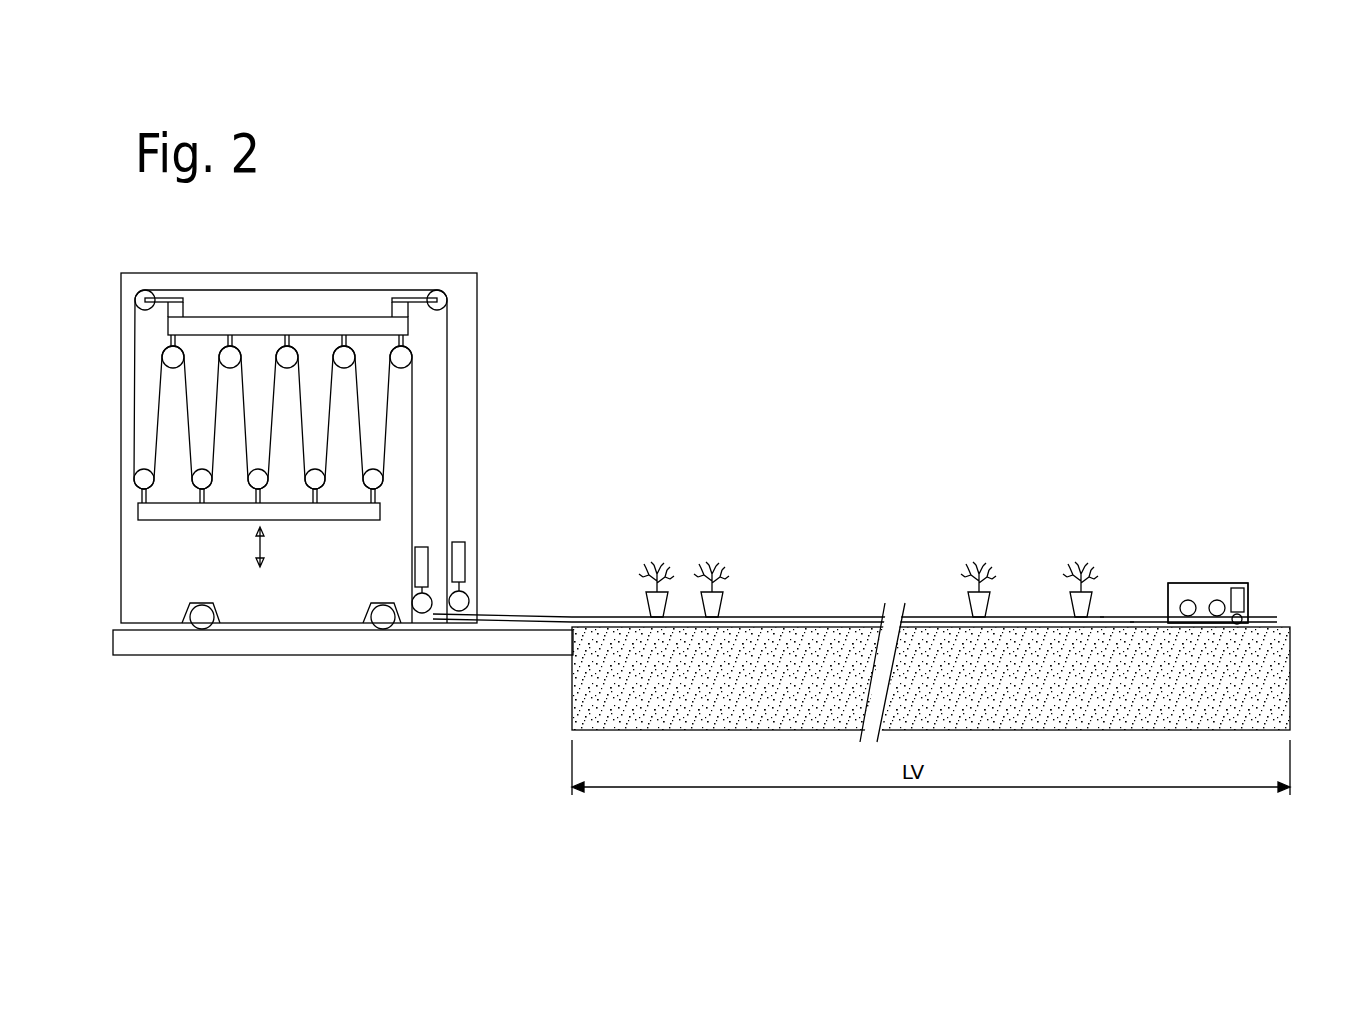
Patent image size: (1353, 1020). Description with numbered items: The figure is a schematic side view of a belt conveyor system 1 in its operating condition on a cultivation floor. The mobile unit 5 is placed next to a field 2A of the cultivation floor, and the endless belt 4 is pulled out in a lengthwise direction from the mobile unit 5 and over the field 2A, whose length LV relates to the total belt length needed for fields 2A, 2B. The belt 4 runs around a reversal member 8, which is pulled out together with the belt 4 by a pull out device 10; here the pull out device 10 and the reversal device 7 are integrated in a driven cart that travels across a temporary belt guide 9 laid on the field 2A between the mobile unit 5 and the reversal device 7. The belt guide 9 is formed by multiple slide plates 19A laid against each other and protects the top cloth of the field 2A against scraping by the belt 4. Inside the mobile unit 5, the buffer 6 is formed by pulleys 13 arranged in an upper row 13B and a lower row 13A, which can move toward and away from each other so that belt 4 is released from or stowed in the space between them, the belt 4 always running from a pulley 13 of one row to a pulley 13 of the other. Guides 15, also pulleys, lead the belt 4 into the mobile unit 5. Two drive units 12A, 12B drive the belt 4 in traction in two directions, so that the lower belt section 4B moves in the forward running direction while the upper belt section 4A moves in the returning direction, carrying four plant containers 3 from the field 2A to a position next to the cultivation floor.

The belt conveyor system 1 is at (783, 458).
The field 2A is at (1065, 707).
The field 2B is at (352, 638).
The plant container 3 is at (660, 603).
The endless belt 4 is at (447, 332).
The upper belt section 4A is at (1132, 618).
The lower belt section 4B is at (1102, 618).
The mobile unit 5 is at (373, 550).
The buffer 6 is at (425, 423).
The reversal device 7 is at (1197, 590).
The pull out device 10 is at (1208, 565).
The reversal member 8 is at (1217, 607).
The temporary belt guide 9 is at (1260, 623).
The drive unit 12A is at (467, 603).
The drive unit 12B is at (425, 613).
The pulley 13 is at (395, 355).
The lower row of pulleys 13A is at (393, 485).
The upper row of pulleys 13B is at (425, 368).
The guide 15 is at (145, 299).
The slide plate 19A is at (787, 625).